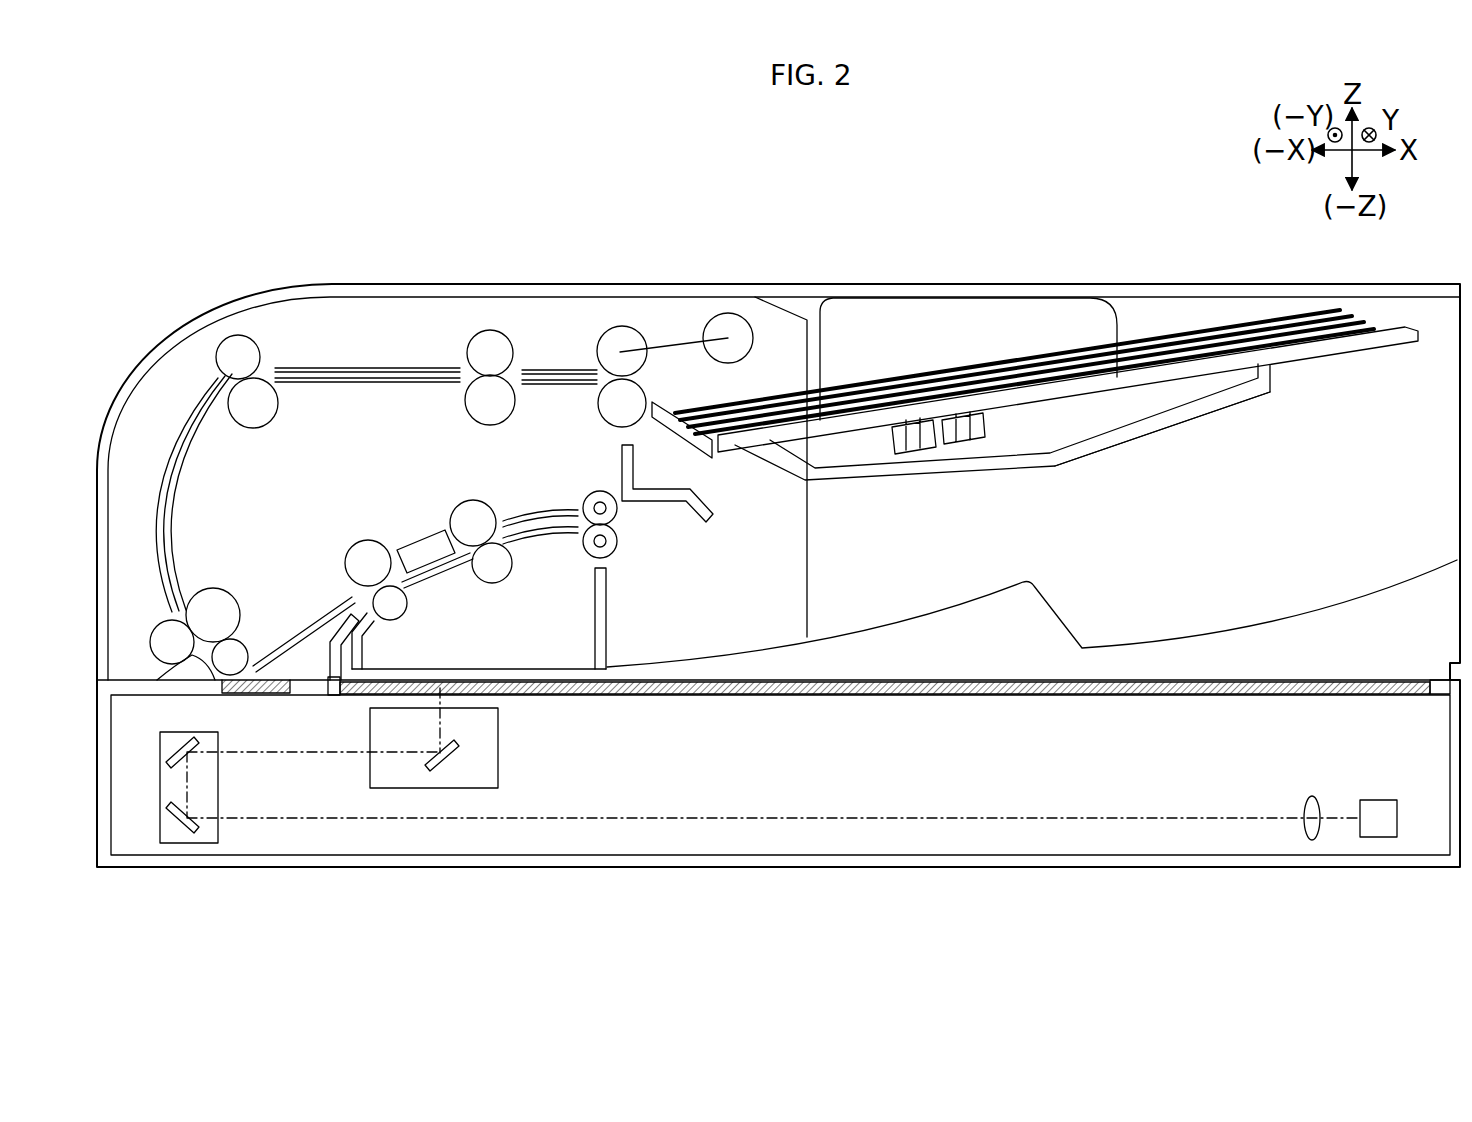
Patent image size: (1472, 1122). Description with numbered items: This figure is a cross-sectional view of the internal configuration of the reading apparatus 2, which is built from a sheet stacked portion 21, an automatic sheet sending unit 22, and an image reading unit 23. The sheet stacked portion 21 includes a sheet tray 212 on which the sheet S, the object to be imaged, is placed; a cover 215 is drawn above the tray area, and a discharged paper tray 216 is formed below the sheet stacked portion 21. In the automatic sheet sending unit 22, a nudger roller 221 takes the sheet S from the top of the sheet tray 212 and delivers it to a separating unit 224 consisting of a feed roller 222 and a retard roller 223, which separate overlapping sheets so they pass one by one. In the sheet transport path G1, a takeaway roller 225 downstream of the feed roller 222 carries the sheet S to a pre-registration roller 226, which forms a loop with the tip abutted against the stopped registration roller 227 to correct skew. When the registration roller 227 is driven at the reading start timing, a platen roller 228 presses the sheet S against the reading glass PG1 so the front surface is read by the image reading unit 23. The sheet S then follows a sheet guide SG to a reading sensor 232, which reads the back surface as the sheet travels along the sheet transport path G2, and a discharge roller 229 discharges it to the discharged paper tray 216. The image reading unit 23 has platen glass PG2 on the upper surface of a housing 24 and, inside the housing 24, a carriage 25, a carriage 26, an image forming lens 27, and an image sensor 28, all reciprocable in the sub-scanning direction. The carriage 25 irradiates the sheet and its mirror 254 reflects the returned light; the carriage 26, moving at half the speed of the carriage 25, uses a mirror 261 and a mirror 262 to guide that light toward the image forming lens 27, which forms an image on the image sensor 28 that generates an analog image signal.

The reading apparatus 2 is at (160, 298).
The sheet stacked portion 21 is at (962, 278).
The automatic sheet sending unit 22 is at (402, 447).
The image reading unit 23 is at (754, 755).
The housing 24 is at (440, 862).
The carriage 25 is at (500, 748).
The carriage 26 is at (220, 792).
The image forming lens 27 is at (1308, 812).
The image sensor 28 is at (1380, 815).
The sheet tray 212 is at (1150, 408).
The cover 215 is at (932, 322).
The discharged paper tray 216 is at (1225, 645).
The nudger roller 221 is at (728, 338).
The feed roller 222 is at (622, 351).
The retard roller 223 is at (615, 405).
The separating unit 224 is at (596, 342).
The takeaway roller 225 is at (463, 343).
The pre-registration roller 226 is at (266, 345).
The registration roller 227 is at (188, 592).
The platen roller 228 is at (232, 655).
The discharge roller 229 is at (582, 539).
The reading sensor 232 is at (432, 547).
The mirror 254 is at (448, 758).
The mirror 261 is at (172, 748).
The mirror 262 is at (172, 832).
The sheet transport path G1 is at (430, 356).
The sheet transport path G2 is at (545, 520).
The sheet S is at (1180, 325).
The sheet guide SG is at (330, 667).
The reading glass PG1 is at (243, 690).
The platen glass PG2 is at (955, 690).